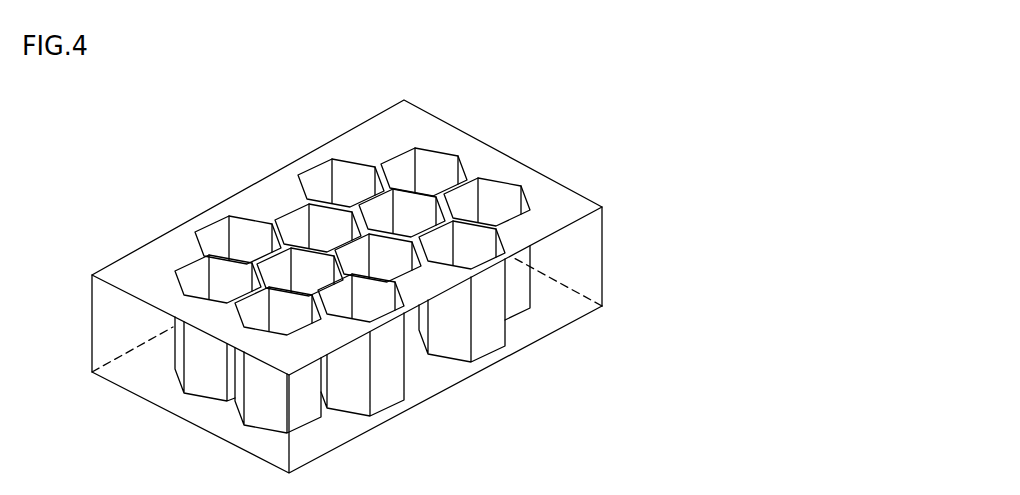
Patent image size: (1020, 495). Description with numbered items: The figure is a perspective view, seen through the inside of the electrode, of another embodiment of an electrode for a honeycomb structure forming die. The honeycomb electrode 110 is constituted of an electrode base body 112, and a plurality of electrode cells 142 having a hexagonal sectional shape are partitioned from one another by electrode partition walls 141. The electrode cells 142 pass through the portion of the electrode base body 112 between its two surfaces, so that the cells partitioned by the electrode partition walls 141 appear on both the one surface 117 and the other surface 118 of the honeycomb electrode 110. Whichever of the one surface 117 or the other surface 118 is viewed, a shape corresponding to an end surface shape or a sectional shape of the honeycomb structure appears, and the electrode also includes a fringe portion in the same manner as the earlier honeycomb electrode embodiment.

The honeycomb electrode 110 is at (543, 157).
The electrode base body 112 is at (593, 250).
The one surface 117 is at (537, 322).
The other surface 118 is at (575, 213).
The electrode partition walls 141 is at (293, 208).
The electrode cells 142 is at (192, 277).